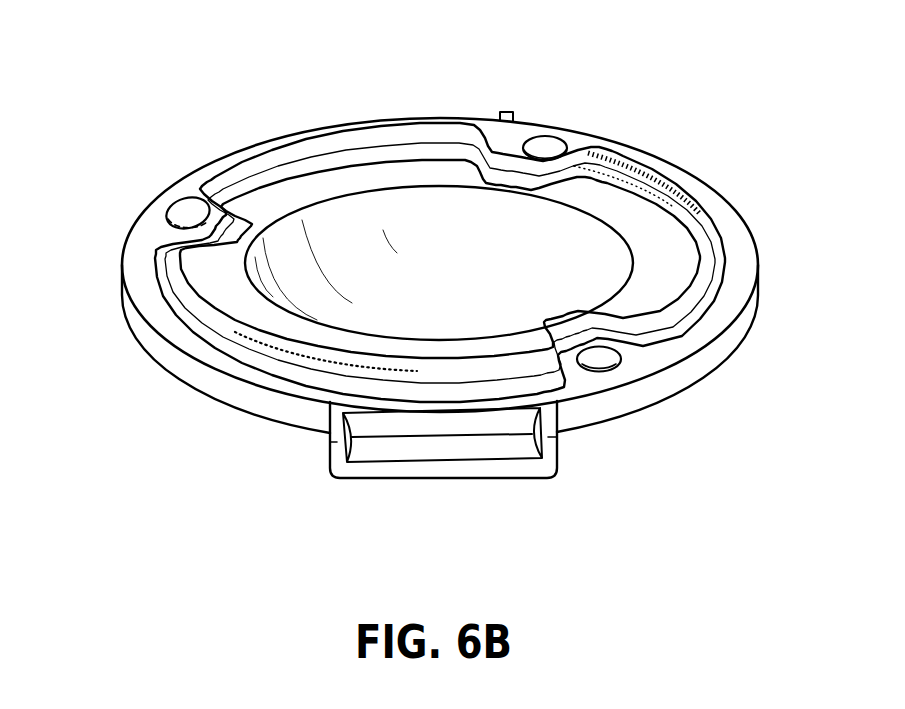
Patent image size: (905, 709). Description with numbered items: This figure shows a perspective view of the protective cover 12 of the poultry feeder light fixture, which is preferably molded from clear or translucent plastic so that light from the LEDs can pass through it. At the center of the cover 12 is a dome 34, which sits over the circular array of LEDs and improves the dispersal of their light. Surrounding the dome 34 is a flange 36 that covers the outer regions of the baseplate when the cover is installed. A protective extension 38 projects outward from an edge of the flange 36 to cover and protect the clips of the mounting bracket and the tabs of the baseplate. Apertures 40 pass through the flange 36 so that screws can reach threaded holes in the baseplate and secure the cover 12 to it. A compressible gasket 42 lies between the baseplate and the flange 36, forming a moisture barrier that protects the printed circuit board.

The protective cover 12 is at (227, 106).
The dome 34 is at (423, 287).
The flange 36 is at (731, 220).
The protective extension 38 is at (453, 457).
The aperture 40 is at (180, 207).
The compressible gasket 42 is at (237, 355).